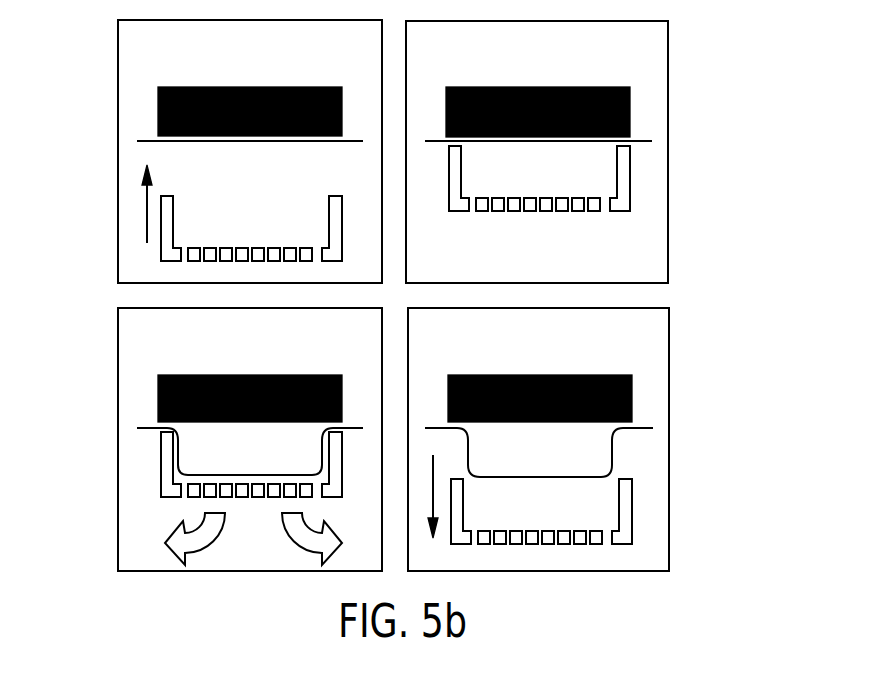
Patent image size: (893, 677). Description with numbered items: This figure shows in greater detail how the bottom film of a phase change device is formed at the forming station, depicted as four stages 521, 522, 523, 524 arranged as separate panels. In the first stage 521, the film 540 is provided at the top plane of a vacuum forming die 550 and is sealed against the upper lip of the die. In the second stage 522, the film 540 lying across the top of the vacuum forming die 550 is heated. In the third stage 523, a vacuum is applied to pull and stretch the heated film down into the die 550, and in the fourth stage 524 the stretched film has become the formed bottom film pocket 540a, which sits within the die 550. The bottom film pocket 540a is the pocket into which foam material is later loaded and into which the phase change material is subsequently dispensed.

The stage 521 is at (76, 115).
The stage 522 is at (742, 158).
The stage 523 is at (76, 405).
The stage 524 is at (742, 416).
The film 540 is at (637, 141).
The bottom film pocket 540a is at (612, 464).
The vacuum forming die 550 is at (161, 257).